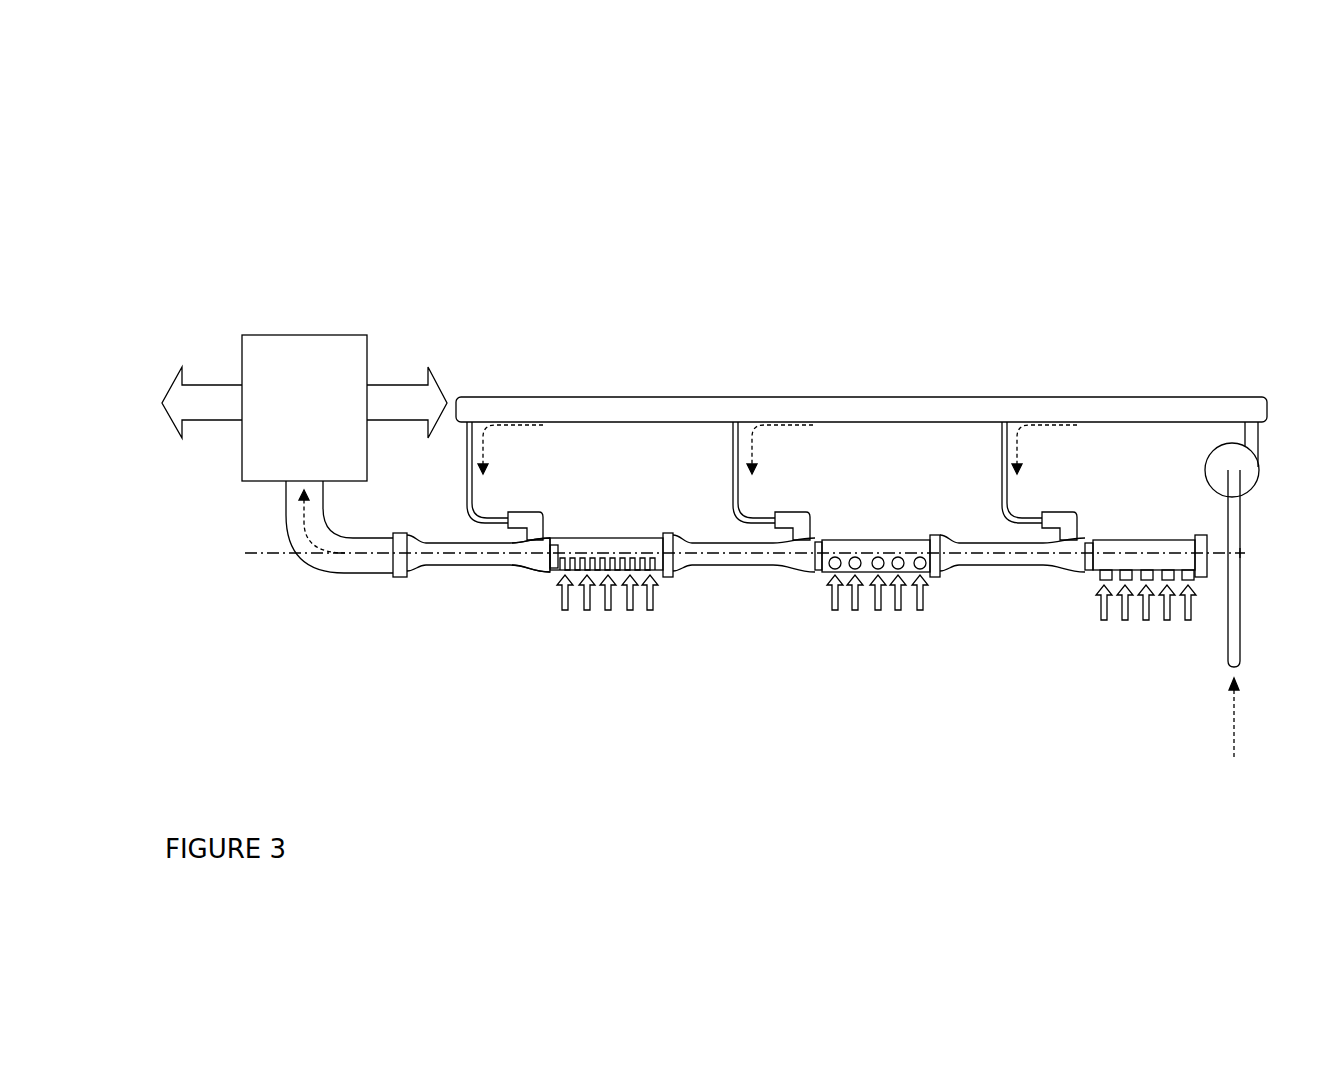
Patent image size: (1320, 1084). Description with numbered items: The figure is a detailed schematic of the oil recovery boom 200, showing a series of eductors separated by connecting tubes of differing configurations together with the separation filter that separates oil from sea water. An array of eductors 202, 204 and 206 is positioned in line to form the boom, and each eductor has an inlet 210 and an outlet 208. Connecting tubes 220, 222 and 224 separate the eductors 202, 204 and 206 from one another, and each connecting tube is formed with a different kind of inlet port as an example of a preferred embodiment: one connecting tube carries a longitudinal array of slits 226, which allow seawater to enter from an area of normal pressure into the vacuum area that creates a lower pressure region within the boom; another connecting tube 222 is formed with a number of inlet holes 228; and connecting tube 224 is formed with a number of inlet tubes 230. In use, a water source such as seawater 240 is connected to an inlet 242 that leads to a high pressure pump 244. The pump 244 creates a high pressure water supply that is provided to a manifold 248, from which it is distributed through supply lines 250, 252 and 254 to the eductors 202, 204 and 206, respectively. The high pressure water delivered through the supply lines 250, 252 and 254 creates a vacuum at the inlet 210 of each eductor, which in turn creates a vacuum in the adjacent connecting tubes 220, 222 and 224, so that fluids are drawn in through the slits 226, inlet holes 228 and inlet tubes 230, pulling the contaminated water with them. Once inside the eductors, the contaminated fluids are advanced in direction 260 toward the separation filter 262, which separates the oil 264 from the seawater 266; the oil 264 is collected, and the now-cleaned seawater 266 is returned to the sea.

The oil recovery boom 200 is at (327, 195).
The eductor 202 is at (477, 567).
The eductor 204 is at (733, 567).
The eductor 206 is at (1007, 565).
The outlet 208 is at (400, 575).
The inlet 210 is at (540, 572).
The connecting tube 220 is at (597, 547).
The connecting tube 222 is at (873, 547).
The connecting tube 224 is at (1127, 547).
The slits 226 is at (558, 570).
The inlet holes 228 is at (830, 570).
The inlet tubes 230 is at (1098, 582).
The seawater 240 is at (1230, 722).
The inlet 242 is at (1237, 628).
The high pressure pump 244 is at (1222, 448).
The manifold 248 is at (878, 408).
The supply line 250 is at (477, 510).
The supply line 252 is at (742, 510).
The supply line 254 is at (1017, 510).
The direction 260 is at (318, 558).
The separation filter 262 is at (318, 350).
The oil 264 is at (230, 392).
The seawater 266 is at (433, 397).